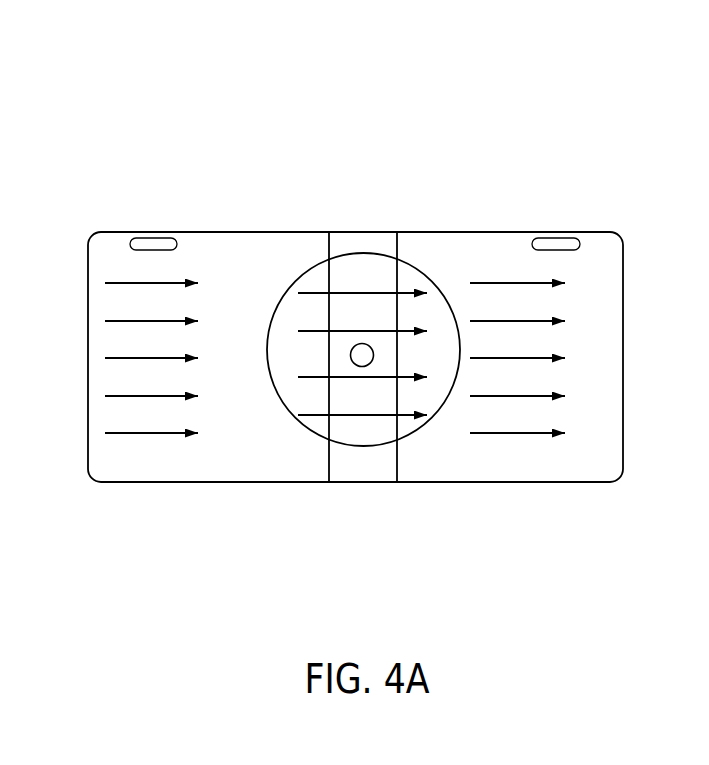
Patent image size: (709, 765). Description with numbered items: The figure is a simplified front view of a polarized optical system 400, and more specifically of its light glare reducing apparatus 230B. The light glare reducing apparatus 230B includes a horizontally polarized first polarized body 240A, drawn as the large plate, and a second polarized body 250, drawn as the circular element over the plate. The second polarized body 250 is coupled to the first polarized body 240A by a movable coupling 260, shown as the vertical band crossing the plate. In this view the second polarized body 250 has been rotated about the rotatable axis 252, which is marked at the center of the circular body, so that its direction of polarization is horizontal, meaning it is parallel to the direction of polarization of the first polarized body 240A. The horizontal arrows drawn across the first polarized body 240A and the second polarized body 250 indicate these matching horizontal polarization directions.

The polarized optical system 400 is at (266, 97).
The first polarized body 240A is at (453, 465).
The light glare reducing apparatus 230B is at (460, 232).
The movable coupling 260 is at (357, 232).
The second polarized body 250 is at (300, 276).
The rotatable axis 252 is at (360, 355).